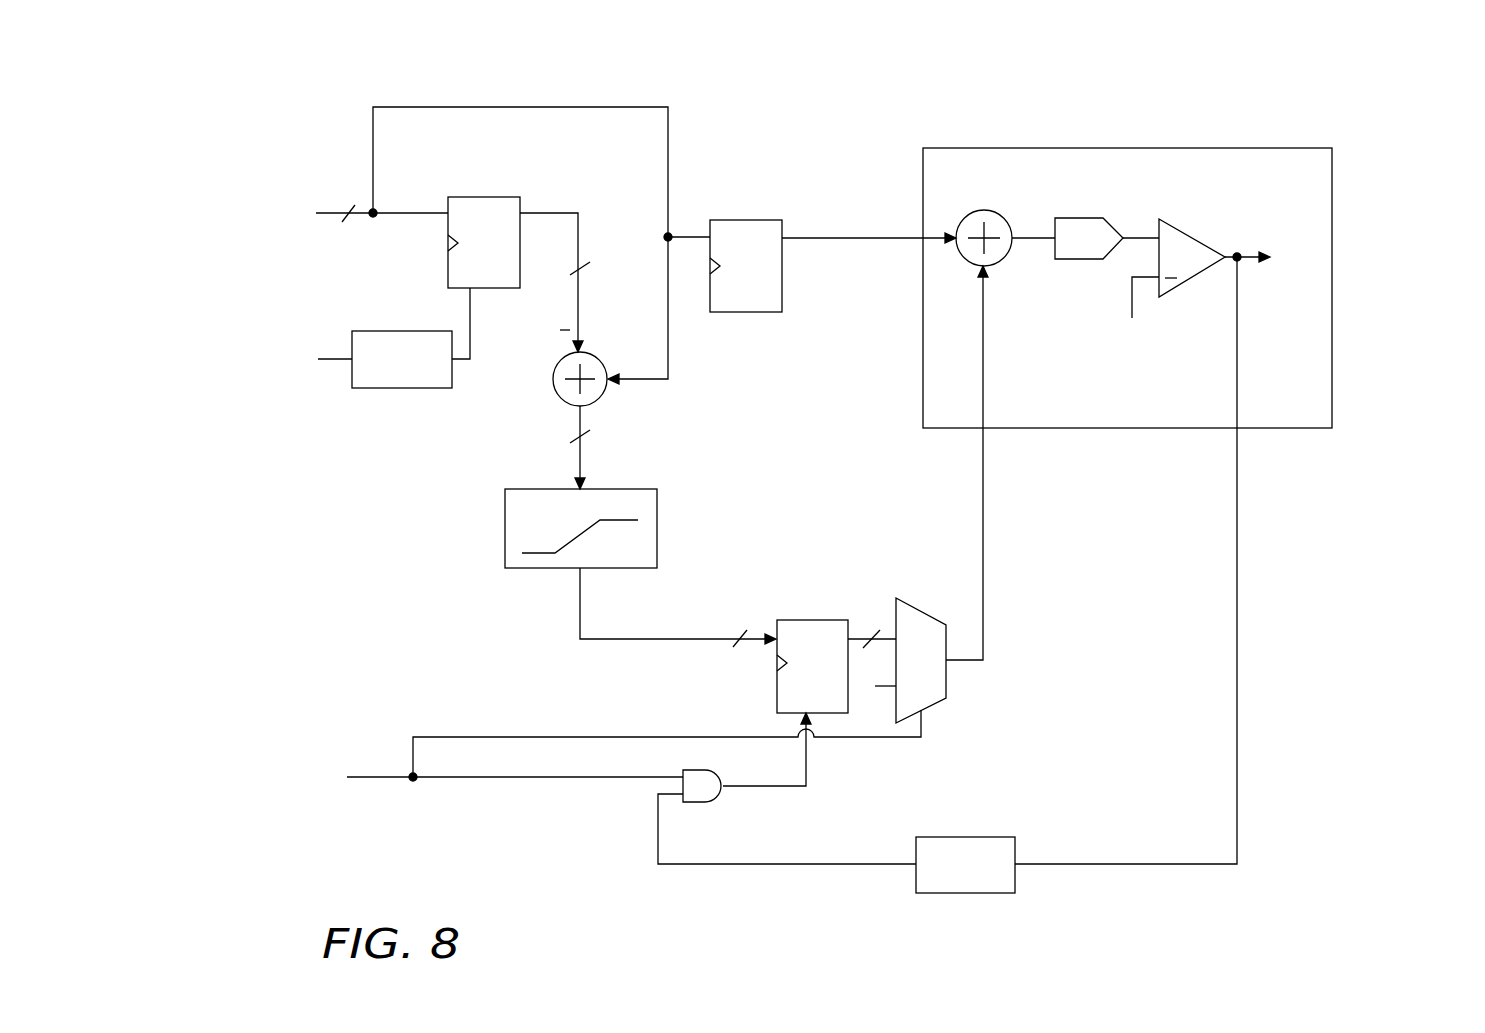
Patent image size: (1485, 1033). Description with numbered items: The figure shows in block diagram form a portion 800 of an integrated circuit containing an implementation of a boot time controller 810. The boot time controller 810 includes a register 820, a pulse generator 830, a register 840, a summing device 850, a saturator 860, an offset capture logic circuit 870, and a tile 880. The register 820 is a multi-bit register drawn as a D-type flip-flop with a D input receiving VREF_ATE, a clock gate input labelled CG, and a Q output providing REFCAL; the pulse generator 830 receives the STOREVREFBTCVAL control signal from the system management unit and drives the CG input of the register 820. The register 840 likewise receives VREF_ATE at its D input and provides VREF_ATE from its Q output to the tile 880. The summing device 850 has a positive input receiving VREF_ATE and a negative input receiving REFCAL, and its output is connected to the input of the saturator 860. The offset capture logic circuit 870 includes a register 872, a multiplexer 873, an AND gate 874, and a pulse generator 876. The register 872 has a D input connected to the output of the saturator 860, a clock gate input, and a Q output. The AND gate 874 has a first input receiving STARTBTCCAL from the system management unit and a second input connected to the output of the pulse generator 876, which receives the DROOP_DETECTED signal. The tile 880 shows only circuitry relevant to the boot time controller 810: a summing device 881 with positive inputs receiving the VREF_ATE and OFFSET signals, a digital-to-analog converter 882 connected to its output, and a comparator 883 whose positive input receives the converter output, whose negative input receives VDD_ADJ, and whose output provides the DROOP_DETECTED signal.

The portion of an integrated circuit 800 is at (218, 90).
The boot time controller 810 is at (340, 116).
The register 820 is at (485, 196).
The pulse generator 830 is at (372, 330).
The register 840 is at (735, 220).
The summing device 850 is at (552, 381).
The saturator 860 is at (522, 487).
The offset capture logic circuit 870 is at (763, 506).
The register 872 is at (800, 619).
The multiplexer 873 is at (935, 587).
The AND gate 874 is at (719, 774).
The pulse generator 876 is at (972, 836).
The tile 880 is at (1013, 148).
The summing device 881 is at (990, 211).
The digital-to-analog converter 882 is at (1078, 218).
The comparator 883 is at (1180, 232).